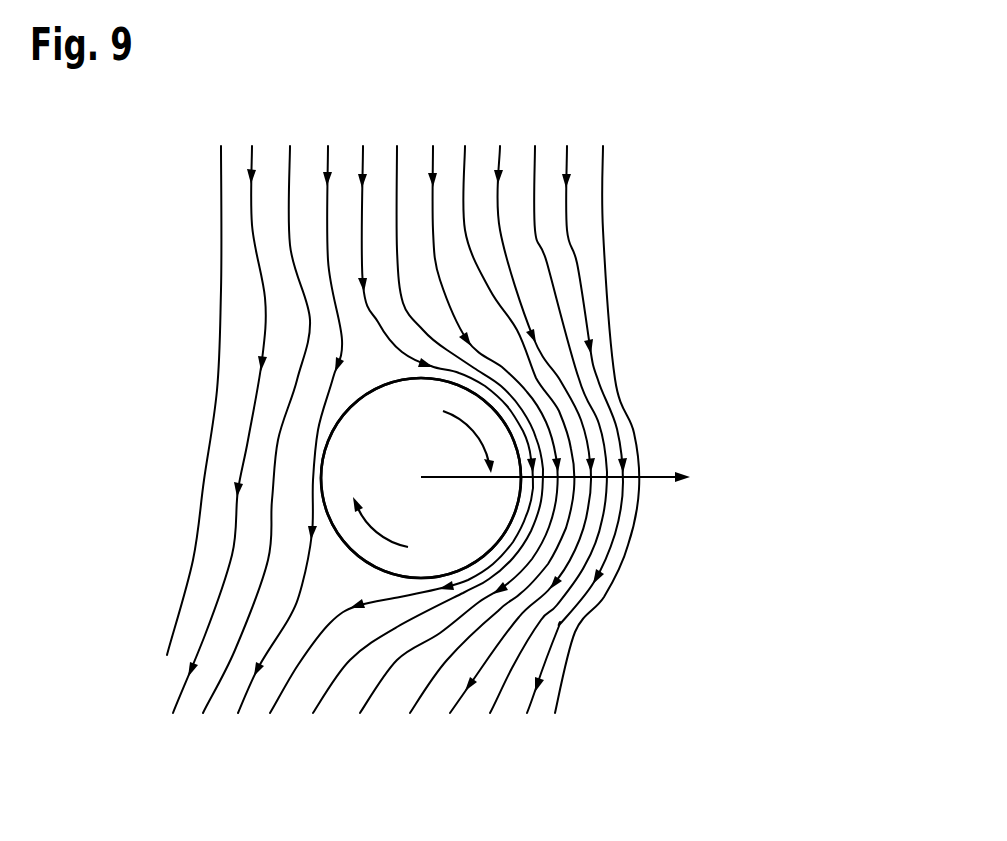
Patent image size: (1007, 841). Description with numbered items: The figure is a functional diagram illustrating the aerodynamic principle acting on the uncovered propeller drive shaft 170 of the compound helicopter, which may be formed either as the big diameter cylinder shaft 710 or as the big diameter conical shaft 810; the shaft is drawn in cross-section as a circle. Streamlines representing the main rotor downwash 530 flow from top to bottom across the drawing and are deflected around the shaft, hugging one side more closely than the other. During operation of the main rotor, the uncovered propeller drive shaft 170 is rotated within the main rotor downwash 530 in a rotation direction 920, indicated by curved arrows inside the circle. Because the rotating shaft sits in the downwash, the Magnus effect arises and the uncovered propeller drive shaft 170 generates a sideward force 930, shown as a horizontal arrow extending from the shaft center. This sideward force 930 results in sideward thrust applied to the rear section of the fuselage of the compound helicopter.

The main rotor downwash 530 is at (568, 163).
The uncovered propeller drive shaft 170 is at (363, 457).
The big diameter cylinder shaft 710 is at (288, 478).
The big diameter conical shaft 810 is at (322, 507).
The rotation direction 920 is at (377, 533).
The sideward force 930 is at (648, 478).